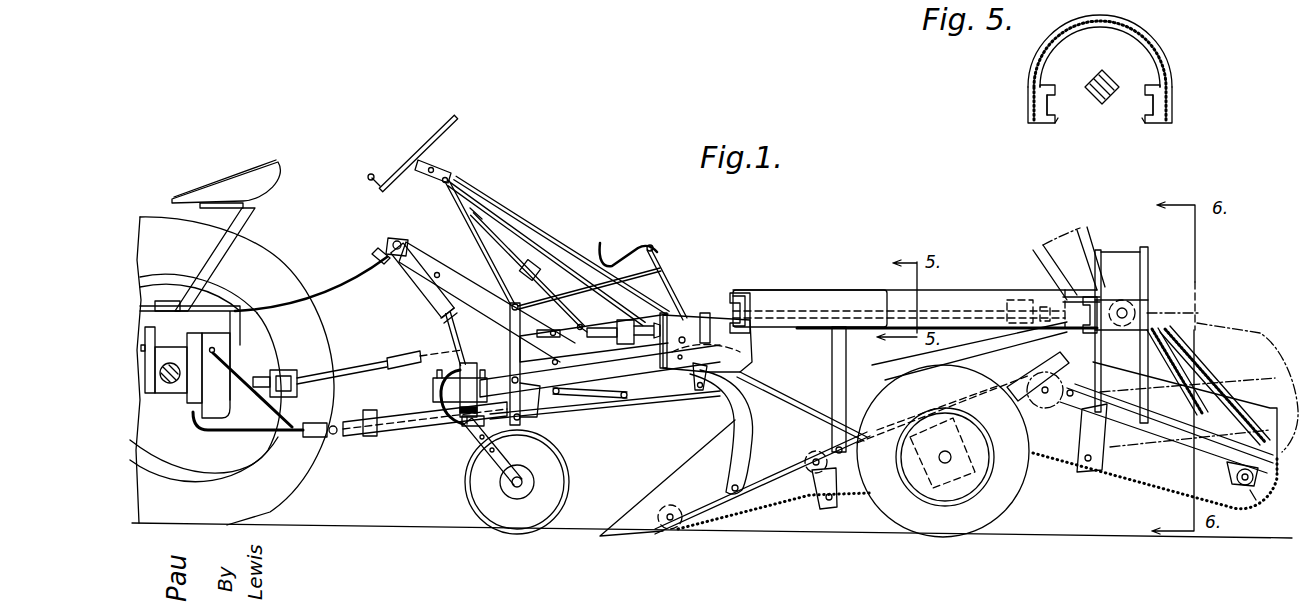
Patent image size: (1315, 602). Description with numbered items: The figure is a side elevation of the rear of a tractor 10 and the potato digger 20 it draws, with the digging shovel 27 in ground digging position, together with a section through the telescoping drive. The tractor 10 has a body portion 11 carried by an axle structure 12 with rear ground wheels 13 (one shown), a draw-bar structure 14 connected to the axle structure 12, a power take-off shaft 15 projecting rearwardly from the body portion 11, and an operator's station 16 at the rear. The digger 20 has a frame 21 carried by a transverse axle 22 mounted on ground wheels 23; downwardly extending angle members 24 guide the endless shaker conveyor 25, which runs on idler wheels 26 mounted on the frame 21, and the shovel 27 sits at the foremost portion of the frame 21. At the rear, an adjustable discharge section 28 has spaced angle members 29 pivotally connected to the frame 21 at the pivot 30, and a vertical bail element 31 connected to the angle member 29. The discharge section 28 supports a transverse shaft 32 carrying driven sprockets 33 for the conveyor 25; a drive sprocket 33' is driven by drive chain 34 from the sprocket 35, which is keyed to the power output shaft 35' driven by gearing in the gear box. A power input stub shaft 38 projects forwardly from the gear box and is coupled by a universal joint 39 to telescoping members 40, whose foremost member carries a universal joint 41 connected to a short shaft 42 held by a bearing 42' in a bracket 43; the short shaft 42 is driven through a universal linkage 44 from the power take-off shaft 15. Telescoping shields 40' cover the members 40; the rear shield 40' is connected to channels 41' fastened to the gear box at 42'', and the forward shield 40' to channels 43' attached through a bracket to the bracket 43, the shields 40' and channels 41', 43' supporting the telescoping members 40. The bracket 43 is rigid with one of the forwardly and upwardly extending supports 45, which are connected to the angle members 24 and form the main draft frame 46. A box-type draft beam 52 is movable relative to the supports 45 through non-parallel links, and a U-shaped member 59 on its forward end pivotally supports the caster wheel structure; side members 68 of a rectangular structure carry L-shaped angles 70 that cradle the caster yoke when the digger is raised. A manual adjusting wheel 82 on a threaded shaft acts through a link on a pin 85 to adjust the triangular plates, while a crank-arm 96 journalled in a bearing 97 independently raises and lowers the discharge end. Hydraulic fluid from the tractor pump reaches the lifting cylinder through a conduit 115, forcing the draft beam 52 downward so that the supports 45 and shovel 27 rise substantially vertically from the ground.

In FIG. 1, the tractor 10 is at (292, 231).
In FIG. 1, the body portion 11 is at (192, 418).
In FIG. 1, the axle structure 12 is at (170, 388).
In FIG. 1, the rear ground wheels 13 is at (264, 493).
In FIG. 1, the draw-bar structure 14 is at (277, 431).
In FIG. 1, the power take-off shaft 15 is at (296, 362).
In FIG. 1, the operator's station 16 is at (238, 183).
In FIG. 1, the potato digger 20 is at (859, 267).
In FIG. 1, the frame 21 is at (792, 497).
In FIG. 1, the transverse axle 22 is at (945, 463).
In FIG. 1, the ground wheels 23 is at (990, 520).
In FIG. 1, the angle members 24 is at (760, 483).
In FIG. 1, the endless shaker conveyor 25 is at (728, 530).
In FIG. 1, the idler wheels 26 is at (808, 458).
In FIG. 1, the digging shovel 27 is at (638, 540).
In FIG. 1, the adjustable discharge section 28 is at (1199, 398).
In FIG. 1, the angle members 29 is at (1167, 440).
In FIG. 1, the pivotal connection 30 is at (1070, 398).
In FIG. 1, the vertical bail element 31 is at (1130, 264).
In FIG. 1, the transverse shaft 32 is at (1243, 487).
In FIG. 1, the driven sprockets 33 is at (1163, 491).
In FIG. 1, the drive sprocket 33' is at (1259, 539).
In FIG. 1, the drive chain 34 is at (1207, 430).
In FIG. 1, the sprocket 35 is at (1184, 311).
In FIG. 1, the power output shaft 35' is at (1150, 303).
In FIG. 1, the power input stub shaft 38 is at (1045, 324).
In FIG. 1, the universal joint 39 is at (1017, 300).
In FIG. 1, the telescoping members 40 is at (899, 295).
In FIG. 5, the telescoping members 40 is at (1102, 72).
In FIG. 1, the telescoping shields 40' is at (899, 290).
In FIG. 5, the telescoping shields 40' is at (1119, 69).
In FIG. 1, the universal joint 41 is at (759, 293).
In FIG. 1, the channels 41' is at (774, 322).
In FIG. 5, the channels 41' is at (1104, 127).
In FIG. 1, the short shaft 42 is at (722, 298).
In FIG. 1, the bearing 42' is at (686, 307).
In FIG. 1, the gear box connection 42'' is at (1113, 273).
In FIG. 1, the bracket 43 is at (727, 352).
In FIG. 5, the channels 43' is at (1100, 137).
In FIG. 1, the universal linkage 44 is at (390, 362).
In FIG. 1, the supports 45 is at (732, 430).
In FIG. 1, the main draft frame 46 is at (650, 399).
In FIG. 1, the box-type draft beam 52 is at (583, 408).
In FIG. 1, the U-shaped member 59 is at (432, 386).
In FIG. 1, the side members 68 is at (405, 436).
In FIG. 1, the L-shaped angle 70 is at (455, 366).
In FIG. 1, the manual adjusting wheel 82 is at (447, 120).
In FIG. 1, the pin 85 is at (620, 320).
In FIG. 1, the crank-arm 96 is at (607, 240).
In FIG. 1, the bearing 97 is at (655, 248).
In FIG. 1, the conduit 115 is at (337, 290).